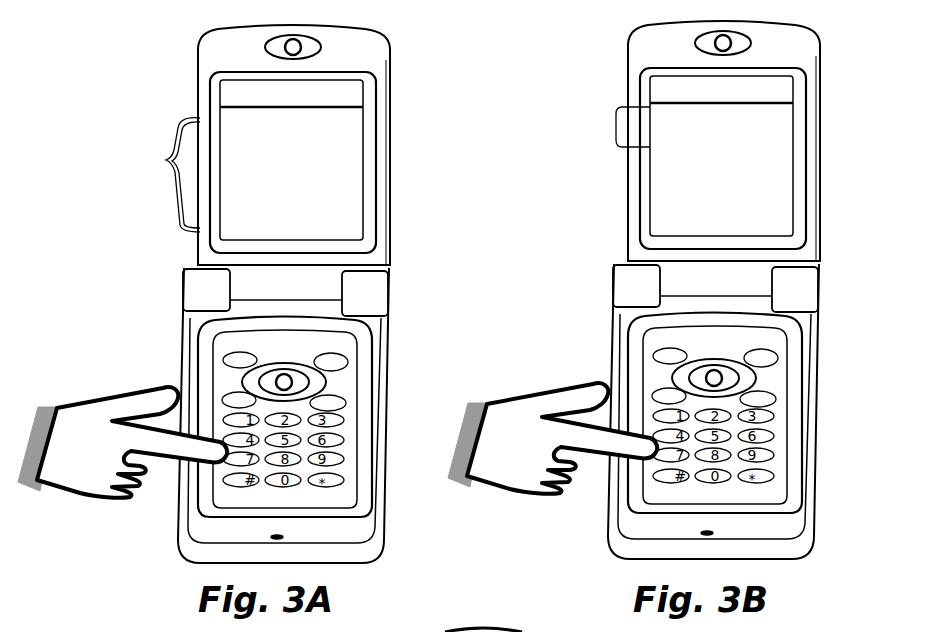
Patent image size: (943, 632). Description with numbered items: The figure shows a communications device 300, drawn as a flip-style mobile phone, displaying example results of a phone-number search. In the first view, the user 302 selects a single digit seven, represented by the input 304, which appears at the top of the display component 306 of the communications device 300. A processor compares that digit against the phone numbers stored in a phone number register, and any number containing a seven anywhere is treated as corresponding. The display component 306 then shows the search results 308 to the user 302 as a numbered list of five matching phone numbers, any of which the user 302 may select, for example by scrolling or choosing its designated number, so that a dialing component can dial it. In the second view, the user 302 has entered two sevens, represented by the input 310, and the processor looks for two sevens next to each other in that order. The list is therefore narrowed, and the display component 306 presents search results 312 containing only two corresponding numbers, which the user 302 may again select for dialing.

In FIG. 3A, the communications device 300 is at (391, 135).
In FIG. 3B, the communications device 300 is at (742, 290).
In FIG. 3A, the user 302 is at (91, 403).
In FIG. 3B, the user 302 is at (552, 417).
In FIG. 3A, the input of "7" 304 is at (368, 96).
In FIG. 3A, the display component 306 is at (323, 222).
In FIG. 3B, the display component 306 is at (663, 156).
In FIG. 3A, the search results 308 is at (166, 158).
In FIG. 3B, the input of "77" 310 is at (757, 60).
In FIG. 3B, the search results 312 is at (663, 120).